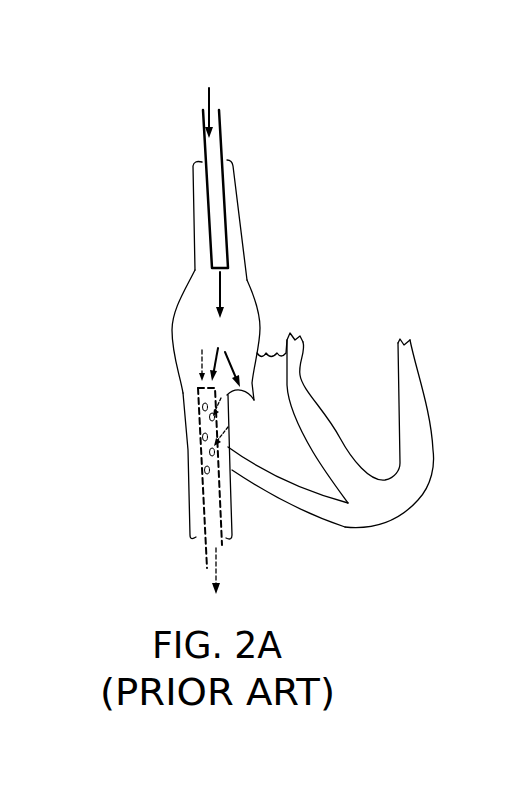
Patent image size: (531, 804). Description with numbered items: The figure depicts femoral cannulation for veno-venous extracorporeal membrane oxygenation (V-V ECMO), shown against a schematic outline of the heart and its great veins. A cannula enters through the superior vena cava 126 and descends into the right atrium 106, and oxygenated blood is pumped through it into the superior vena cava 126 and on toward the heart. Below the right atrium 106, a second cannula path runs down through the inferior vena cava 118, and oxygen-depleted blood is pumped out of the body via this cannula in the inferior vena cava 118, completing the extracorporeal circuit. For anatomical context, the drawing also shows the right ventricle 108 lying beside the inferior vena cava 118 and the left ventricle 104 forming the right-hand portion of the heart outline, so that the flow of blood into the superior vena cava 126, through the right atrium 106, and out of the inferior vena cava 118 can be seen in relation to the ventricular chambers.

The left ventricle 104 is at (380, 442).
The right atrium 106 is at (175, 312).
The right ventricle 108 is at (320, 488).
The inferior vena cava 118 is at (188, 510).
The superior vena cava 126 is at (238, 223).